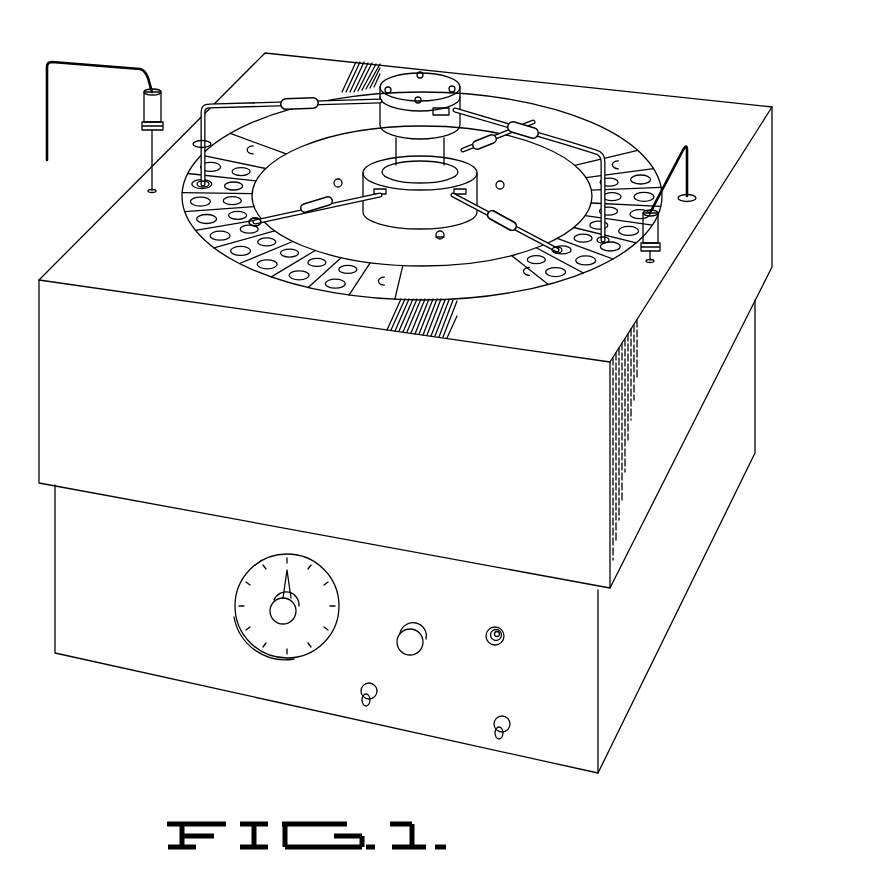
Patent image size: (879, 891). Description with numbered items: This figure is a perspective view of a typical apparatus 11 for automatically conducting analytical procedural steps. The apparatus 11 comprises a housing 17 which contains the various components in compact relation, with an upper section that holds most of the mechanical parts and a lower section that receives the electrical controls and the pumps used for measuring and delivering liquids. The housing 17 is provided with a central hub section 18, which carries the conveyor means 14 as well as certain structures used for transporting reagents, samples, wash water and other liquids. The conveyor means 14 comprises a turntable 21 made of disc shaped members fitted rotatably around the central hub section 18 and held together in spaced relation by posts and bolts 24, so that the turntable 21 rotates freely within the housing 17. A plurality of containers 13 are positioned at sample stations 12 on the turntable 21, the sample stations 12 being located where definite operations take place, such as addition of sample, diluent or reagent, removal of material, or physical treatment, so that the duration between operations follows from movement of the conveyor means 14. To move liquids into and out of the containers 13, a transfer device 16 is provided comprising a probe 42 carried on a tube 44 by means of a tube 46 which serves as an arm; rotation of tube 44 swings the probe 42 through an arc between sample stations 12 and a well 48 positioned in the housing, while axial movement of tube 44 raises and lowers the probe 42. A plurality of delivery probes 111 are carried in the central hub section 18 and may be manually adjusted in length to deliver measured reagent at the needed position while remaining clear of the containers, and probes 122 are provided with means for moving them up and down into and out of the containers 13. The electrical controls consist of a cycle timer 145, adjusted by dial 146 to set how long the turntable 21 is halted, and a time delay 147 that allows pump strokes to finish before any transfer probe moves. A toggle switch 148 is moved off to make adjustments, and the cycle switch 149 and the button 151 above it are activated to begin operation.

The apparatus 11 is at (176, 696).
The sample stations 12 is at (247, 262).
The containers 13 is at (262, 224).
The conveyor means 14 is at (513, 213).
The transfer device 16 is at (140, 122).
The housing 17 is at (710, 108).
The central hub section 18 is at (402, 208).
The turntable 21 is at (486, 101).
The bolts 24 is at (444, 236).
The probe 42 is at (52, 120).
The tube 44 is at (148, 160).
The tube 46 is at (104, 64).
The well 48 is at (190, 140).
The delivery probes 111 is at (283, 208).
The probes 122 is at (292, 97).
The cycle timer 145 is at (340, 598).
The dial 146 is at (270, 608).
The time delay 147 is at (425, 633).
The toggle switch 148 is at (378, 696).
The cycle switch 149 is at (512, 725).
The button 151 is at (505, 640).